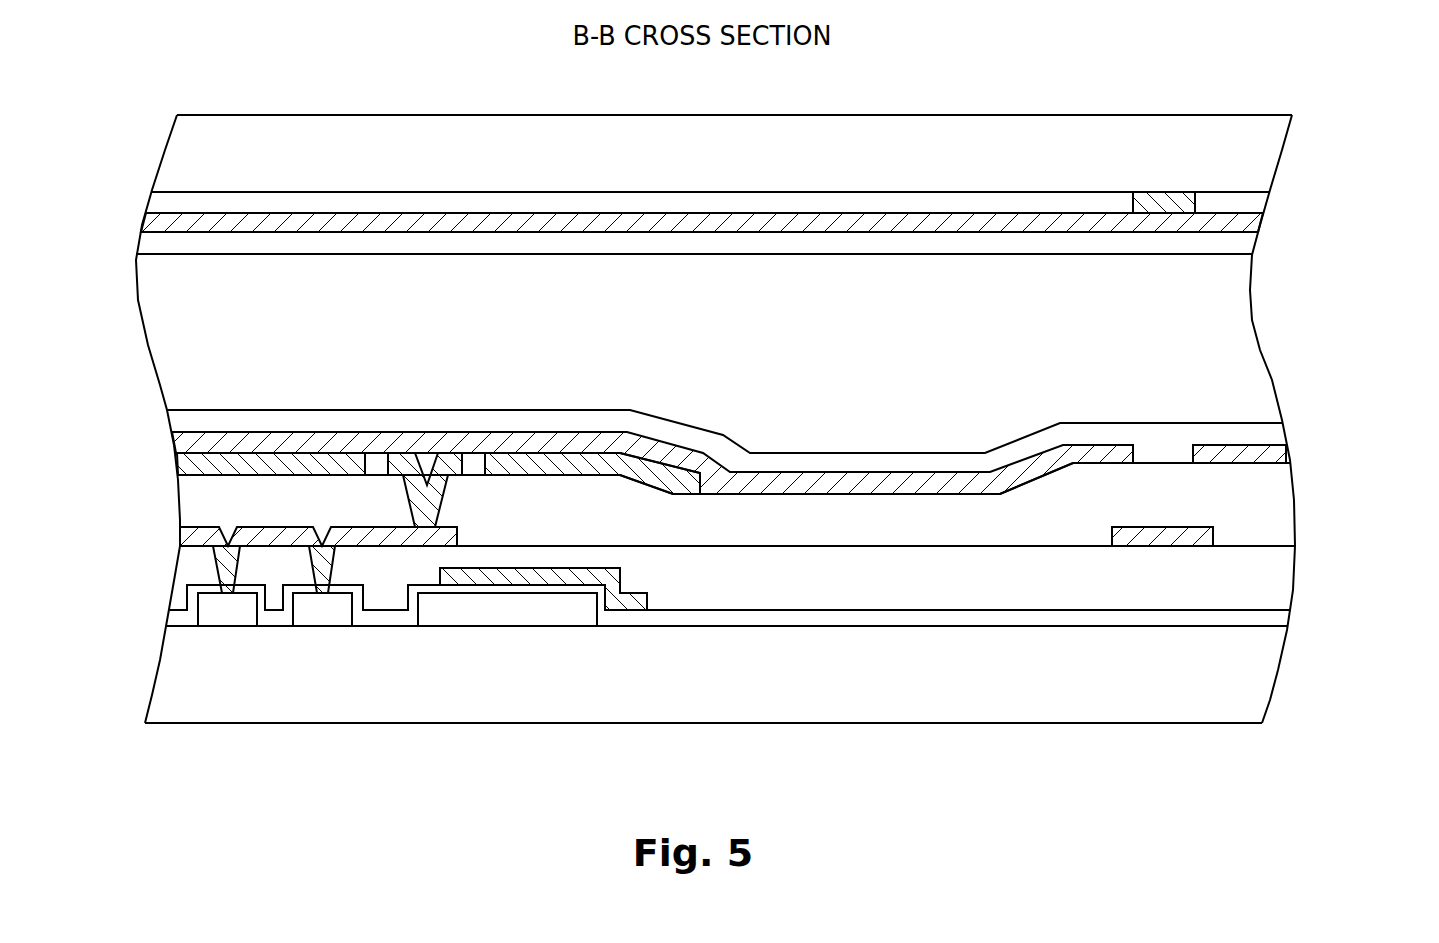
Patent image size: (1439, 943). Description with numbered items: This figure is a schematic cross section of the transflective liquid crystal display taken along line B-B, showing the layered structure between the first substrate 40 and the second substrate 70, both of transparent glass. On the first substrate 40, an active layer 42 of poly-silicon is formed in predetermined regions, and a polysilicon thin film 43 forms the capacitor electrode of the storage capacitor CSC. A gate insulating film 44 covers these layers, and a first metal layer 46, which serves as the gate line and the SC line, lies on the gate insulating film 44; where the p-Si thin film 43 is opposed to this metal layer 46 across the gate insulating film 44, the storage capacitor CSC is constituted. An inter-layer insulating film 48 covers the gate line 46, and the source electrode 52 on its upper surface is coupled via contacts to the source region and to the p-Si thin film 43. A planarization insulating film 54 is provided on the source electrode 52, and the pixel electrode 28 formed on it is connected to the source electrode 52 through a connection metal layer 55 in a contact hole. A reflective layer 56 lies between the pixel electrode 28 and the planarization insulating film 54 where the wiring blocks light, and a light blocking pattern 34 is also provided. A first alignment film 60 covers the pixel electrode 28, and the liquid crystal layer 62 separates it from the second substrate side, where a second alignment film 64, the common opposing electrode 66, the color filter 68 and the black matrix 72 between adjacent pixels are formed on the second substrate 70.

The second substrate 70 is at (1260, 153).
The color filter 68 is at (1253, 200).
The black matrix 72 is at (1163, 192).
The opposing electrode 66 is at (1250, 220).
The second alignment film 64 is at (1248, 244).
The liquid crystal layer 62 is at (1247, 337).
The first alignment film 60 is at (1273, 433).
The pixel electrode 28 is at (600, 432).
The reflective layer 56 is at (190, 467).
The connection metal layer 55 is at (430, 502).
The planarization insulating film 54 is at (1280, 509).
The light blocking pattern 34 is at (1145, 527).
The source electrode 52 is at (190, 540).
The inter-layer insulating film 48 is at (1267, 580).
The gate line 46 is at (637, 591).
The gate insulating film 44 is at (1273, 615).
The active layer 42 is at (227, 617).
The p-Si thin film 43 is at (323, 617).
The storage capacitor CSC is at (575, 637).
The first substrate 40 is at (1250, 667).